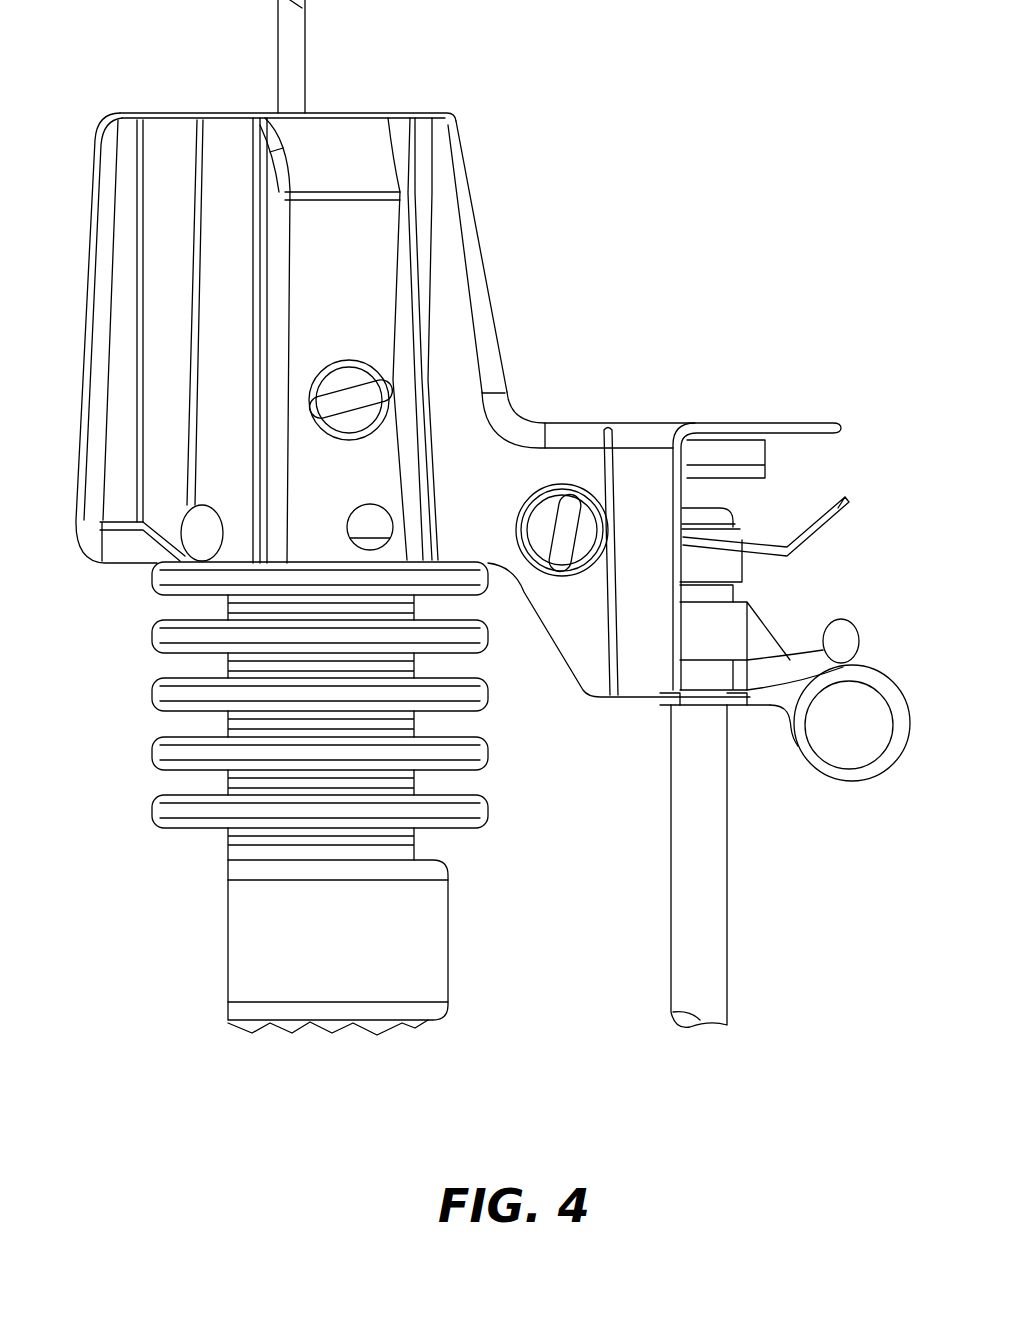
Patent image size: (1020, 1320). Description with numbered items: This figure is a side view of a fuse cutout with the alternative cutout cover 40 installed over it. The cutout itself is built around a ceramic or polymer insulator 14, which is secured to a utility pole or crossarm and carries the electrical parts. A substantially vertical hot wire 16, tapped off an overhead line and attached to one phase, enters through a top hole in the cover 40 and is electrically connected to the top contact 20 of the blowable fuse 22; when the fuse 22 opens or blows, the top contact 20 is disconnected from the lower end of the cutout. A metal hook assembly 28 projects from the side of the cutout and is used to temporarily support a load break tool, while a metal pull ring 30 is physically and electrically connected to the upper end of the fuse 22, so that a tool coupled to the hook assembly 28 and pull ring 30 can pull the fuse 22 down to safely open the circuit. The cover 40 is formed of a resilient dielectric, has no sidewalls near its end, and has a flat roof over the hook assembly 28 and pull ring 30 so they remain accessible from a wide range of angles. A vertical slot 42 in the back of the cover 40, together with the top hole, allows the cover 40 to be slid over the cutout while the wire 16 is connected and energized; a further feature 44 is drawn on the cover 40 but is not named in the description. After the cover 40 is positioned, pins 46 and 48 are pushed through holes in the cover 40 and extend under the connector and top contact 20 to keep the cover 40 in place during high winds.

The insulator 14 is at (150, 638).
The hot wire 16 is at (307, 68).
The top contact 20 is at (807, 523).
The blowable fuse 22 is at (728, 865).
The hook assembly 28 is at (850, 623).
The pull ring 30 is at (845, 784).
The cutout cover 40 is at (578, 228).
The vertical slot 42 is at (93, 146).
The channel rib 44 is at (258, 117).
The pin 46 is at (373, 398).
The pin 48 is at (557, 577).